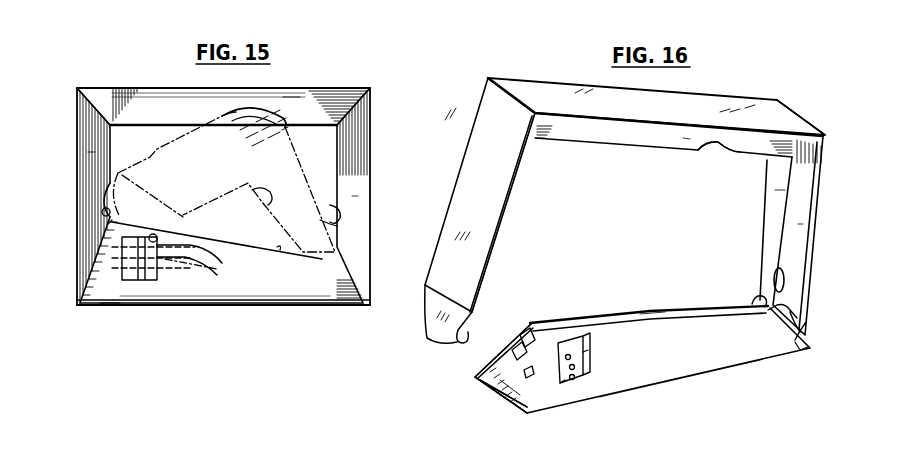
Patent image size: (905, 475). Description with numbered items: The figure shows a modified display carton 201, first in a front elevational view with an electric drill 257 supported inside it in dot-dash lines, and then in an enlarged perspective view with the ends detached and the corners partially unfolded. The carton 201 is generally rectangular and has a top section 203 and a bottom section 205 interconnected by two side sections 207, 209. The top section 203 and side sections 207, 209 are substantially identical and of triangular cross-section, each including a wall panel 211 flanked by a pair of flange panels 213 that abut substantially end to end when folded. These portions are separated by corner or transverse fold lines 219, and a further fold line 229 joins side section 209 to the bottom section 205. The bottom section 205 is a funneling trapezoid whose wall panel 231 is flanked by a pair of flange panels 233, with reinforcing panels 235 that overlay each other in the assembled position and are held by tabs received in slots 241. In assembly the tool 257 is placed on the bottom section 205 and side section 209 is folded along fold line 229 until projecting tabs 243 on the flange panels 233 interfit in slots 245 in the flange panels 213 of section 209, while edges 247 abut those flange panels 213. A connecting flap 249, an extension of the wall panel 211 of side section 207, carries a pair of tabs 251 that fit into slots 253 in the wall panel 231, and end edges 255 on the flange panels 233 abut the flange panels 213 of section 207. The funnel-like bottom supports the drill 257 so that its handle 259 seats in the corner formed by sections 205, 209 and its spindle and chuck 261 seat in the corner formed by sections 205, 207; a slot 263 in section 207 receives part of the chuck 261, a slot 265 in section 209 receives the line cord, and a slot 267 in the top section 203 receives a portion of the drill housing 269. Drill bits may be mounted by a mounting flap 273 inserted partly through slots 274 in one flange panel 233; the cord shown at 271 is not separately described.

In FIG. 15, the carton 201 is at (339, 63).
In FIG. 16, the carton 201 is at (737, 90).
In FIG. 15, the top section 203 is at (121, 86).
In FIG. 16, the top section 203 is at (612, 142).
In FIG. 15, the bottom section 205 is at (241, 307).
In FIG. 16, the bottom section 205 is at (651, 308).
In FIG. 15, the side section 207 is at (72, 297).
In FIG. 16, the side section 207 is at (498, 252).
In FIG. 15, the side section 209 is at (375, 158).
In FIG. 16, the side section 209 is at (763, 234).
In FIG. 16, the wall panel 211 is at (706, 122).
In FIG. 15, the flange panel 213 is at (283, 97).
In FIG. 16, the flange panel 213 is at (683, 138).
In FIG. 15, the transverse fold line 219 is at (77, 88).
In FIG. 16, the transverse fold line 219 is at (516, 92).
In FIG. 15, the transverse fold line 229 is at (369, 306).
In FIG. 16, the wall panel 231 is at (518, 398).
In FIG. 15, the flange panel 233 is at (267, 296).
In FIG. 16, the flange panel 233 is at (752, 364).
In FIG. 15, the reinforcing panel 235 is at (280, 249).
In FIG. 16, the reinforcing panel 235 is at (697, 313).
In FIG. 16, the slot 241 is at (524, 332).
In FIG. 16, the projecting tab 243 is at (755, 300).
In FIG. 16, the slot 245 is at (797, 318).
In FIG. 16, the edge 247 is at (797, 352).
In FIG. 15, the connecting flap 249 is at (110, 306).
In FIG. 16, the connecting flap 249 is at (427, 338).
In FIG. 16, the tab 251 is at (460, 348).
In FIG. 16, the slot 253 is at (513, 393).
In FIG. 16, the end edge 255 is at (530, 375).
In FIG. 15, the electric drill 257 is at (314, 150).
In FIG. 15, the drill handle 259 is at (338, 224).
In FIG. 15, the drill spindle and chuck 261 is at (95, 215).
In FIG. 15, the slot 263 is at (108, 224).
In FIG. 15, the slot 265 is at (342, 212).
In FIG. 16, the slot 265 is at (785, 286).
In FIG. 15, the slot 267 is at (298, 122).
In FIG. 16, the slot 267 is at (722, 146).
In FIG. 15, the drill housing 269 is at (222, 116).
In FIG. 15, the cord 271 is at (206, 272).
In FIG. 15, the mounting flap 273 is at (152, 282).
In FIG. 16, the mounting flap 273 is at (583, 380).
In FIG. 15, the slot 274 is at (122, 280).
In FIG. 16, the slot 274 is at (588, 352).